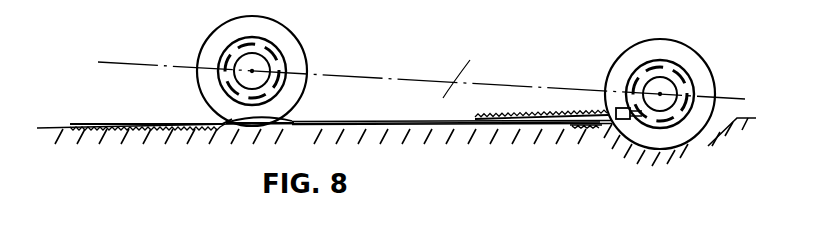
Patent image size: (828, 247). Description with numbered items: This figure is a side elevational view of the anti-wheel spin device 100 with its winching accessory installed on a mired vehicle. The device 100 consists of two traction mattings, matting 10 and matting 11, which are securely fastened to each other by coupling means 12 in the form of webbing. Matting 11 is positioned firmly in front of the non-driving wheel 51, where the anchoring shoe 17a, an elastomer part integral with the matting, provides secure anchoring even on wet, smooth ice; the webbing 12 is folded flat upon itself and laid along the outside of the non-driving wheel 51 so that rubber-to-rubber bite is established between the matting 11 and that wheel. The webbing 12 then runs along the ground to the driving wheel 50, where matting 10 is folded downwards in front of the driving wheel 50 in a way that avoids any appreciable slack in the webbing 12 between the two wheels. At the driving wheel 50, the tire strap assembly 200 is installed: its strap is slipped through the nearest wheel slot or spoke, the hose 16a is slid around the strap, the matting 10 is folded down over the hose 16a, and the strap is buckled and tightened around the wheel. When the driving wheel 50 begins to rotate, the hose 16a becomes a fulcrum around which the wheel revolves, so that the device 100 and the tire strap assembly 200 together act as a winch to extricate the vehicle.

The matting means 10 is at (537, 116).
The matting means 11 is at (136, 166).
The coupling means 12 is at (369, 115).
The hose 16a is at (578, 130).
The anchoring shoe 17a is at (205, 118).
The driving wheel 50 is at (693, 48).
The non-driving wheel 51 is at (296, 34).
The anti-wheel spin device 100 is at (475, 70).
The tire strap assembly 200 is at (625, 124).